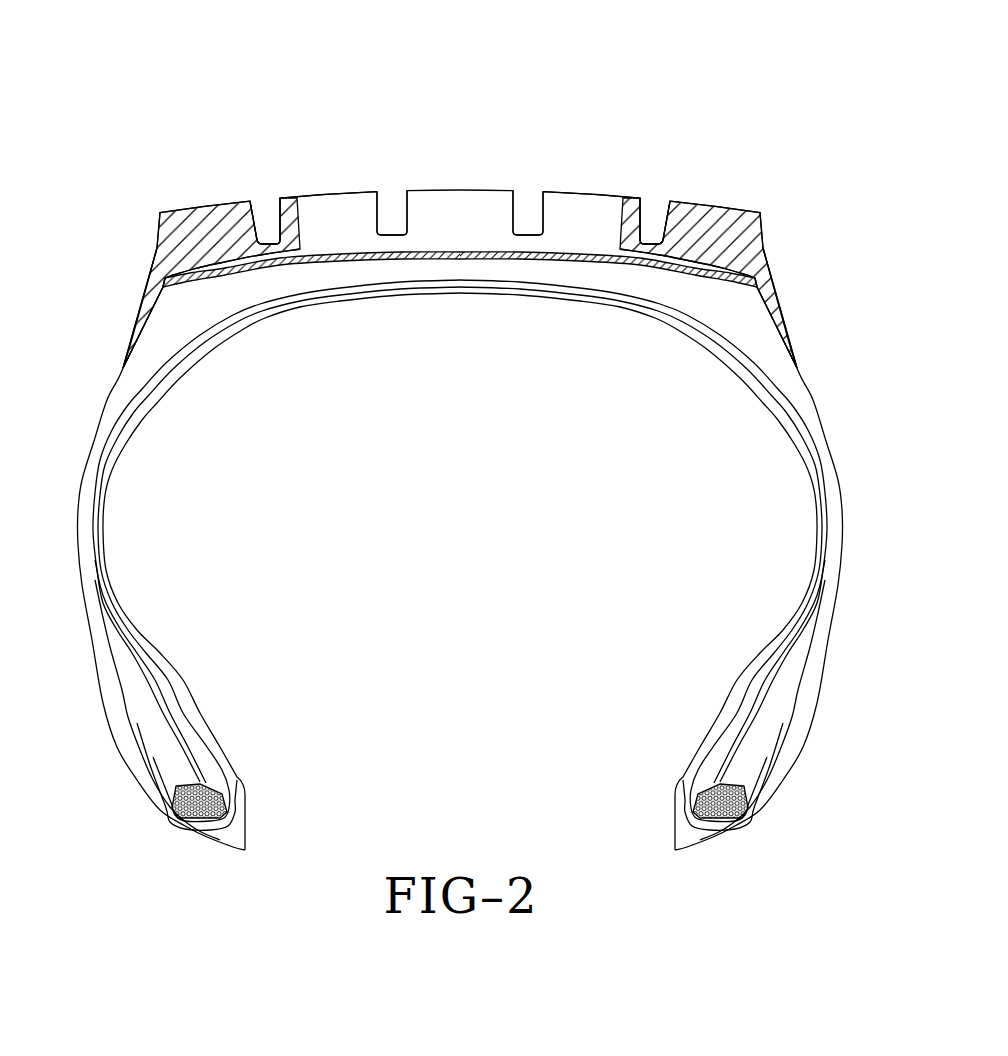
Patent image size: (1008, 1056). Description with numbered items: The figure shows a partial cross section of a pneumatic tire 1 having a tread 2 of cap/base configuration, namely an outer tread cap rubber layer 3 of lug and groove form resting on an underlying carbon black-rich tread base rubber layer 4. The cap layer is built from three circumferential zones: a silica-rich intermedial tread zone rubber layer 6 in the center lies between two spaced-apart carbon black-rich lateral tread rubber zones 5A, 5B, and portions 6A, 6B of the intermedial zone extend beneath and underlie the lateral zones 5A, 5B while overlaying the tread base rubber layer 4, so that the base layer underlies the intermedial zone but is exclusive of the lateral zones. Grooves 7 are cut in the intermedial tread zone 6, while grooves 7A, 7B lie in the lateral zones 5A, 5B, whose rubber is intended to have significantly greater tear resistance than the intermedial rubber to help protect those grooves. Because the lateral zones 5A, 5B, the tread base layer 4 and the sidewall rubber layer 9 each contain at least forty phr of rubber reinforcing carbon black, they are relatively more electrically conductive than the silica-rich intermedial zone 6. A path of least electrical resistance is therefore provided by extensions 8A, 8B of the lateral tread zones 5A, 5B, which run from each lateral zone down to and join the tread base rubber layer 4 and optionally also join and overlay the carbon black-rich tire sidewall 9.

The pneumatic tire partial cross section 1 is at (133, 101).
The tread 2 is at (444, 176).
The outer tread cap rubber layer 3 is at (324, 186).
The tread base rubber layer 4 is at (510, 265).
The carbon black-rich lateral tread rubber zone 5A is at (203, 221).
The carbon black-rich lateral tread rubber zone 5B is at (718, 222).
The silica-rich intermedial tread zone rubber layer 6 is at (463, 205).
The portion of intermedial tread zone 6A is at (193, 272).
The portion of intermedial tread zone 6B is at (727, 272).
The grooves 7 is at (380, 207).
The groove 7A is at (264, 208).
The groove 7B is at (656, 208).
The extension of lateral tread rubber zone 8A is at (146, 323).
The extension of lateral tread rubber zone 8B is at (774, 323).
The sidewall rubber layer 9 is at (102, 430).